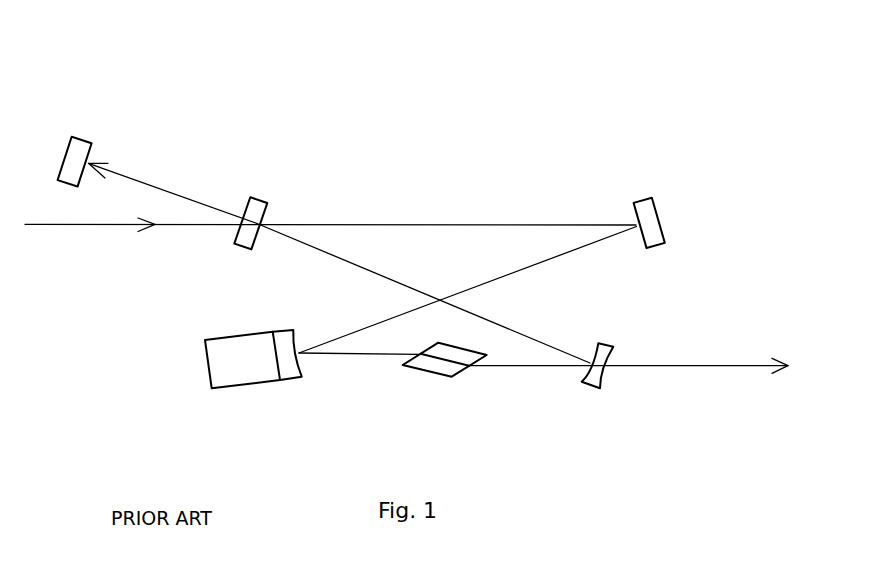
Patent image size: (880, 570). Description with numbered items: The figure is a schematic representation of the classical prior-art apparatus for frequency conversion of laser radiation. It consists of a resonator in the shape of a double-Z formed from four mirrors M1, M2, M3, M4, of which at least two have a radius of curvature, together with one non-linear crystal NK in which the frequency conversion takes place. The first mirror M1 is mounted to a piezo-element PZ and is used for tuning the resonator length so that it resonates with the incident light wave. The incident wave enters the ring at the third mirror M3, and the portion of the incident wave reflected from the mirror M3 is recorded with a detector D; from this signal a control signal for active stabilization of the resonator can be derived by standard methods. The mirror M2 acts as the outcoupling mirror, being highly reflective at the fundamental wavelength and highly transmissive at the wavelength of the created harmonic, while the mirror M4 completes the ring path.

The detector D is at (125, 100).
The first mirror M1 is at (245, 388).
The outcoupling mirror M2 is at (627, 388).
The third mirror M3 is at (305, 149).
The fourth mirror M4 is at (684, 149).
The piezo-element PZ is at (195, 344).
The non-linear crystal NK is at (469, 407).